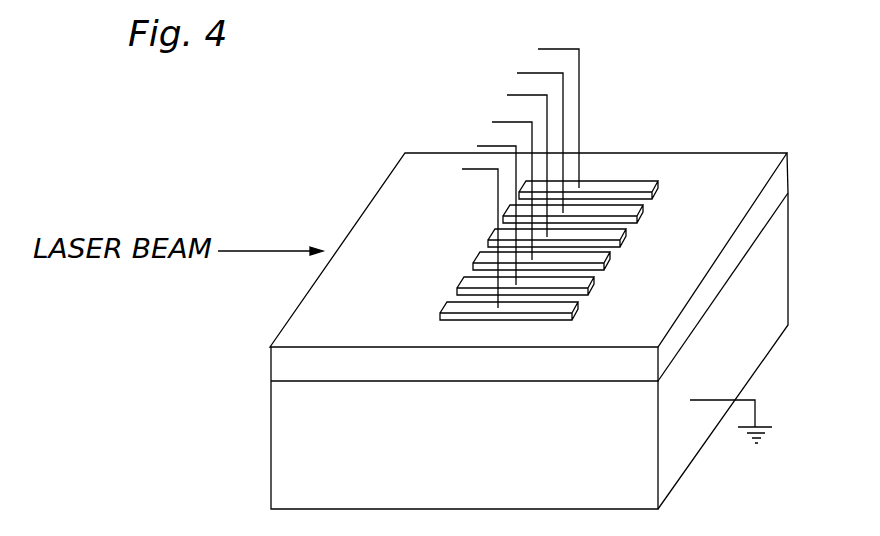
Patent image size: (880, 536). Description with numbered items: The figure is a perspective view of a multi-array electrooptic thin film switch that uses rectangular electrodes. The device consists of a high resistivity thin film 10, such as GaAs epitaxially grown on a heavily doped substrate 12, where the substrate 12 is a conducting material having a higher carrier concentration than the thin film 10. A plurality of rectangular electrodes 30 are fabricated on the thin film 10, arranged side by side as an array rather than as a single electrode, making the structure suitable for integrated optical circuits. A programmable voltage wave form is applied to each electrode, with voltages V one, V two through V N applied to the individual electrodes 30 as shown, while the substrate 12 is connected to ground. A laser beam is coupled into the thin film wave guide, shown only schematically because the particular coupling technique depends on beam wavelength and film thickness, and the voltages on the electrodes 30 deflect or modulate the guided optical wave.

The thin film 10 is at (782, 173).
The substrate 12 is at (780, 243).
The rectangular electrodes 30 is at (611, 262).